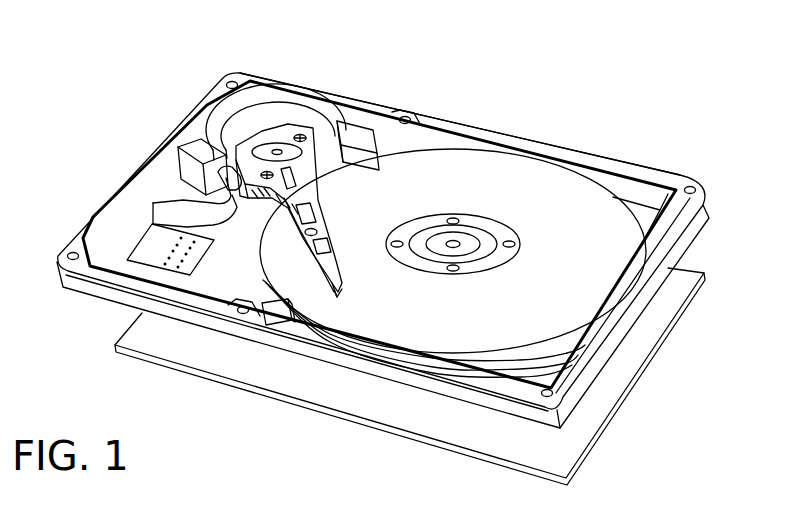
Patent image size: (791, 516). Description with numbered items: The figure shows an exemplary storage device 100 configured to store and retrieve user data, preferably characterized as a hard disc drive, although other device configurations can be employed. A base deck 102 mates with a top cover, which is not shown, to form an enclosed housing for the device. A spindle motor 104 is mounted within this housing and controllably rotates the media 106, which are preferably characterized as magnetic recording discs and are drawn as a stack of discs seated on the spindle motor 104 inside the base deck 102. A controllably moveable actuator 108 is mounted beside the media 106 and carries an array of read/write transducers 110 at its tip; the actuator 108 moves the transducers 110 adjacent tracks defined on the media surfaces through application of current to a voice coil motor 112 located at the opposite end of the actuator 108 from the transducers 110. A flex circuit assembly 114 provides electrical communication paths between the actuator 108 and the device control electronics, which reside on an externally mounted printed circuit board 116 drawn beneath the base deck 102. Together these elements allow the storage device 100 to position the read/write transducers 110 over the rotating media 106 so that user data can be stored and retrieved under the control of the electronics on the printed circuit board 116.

The storage device 100 is at (92, 74).
The base deck 102 is at (622, 333).
The spindle motor 104 is at (462, 236).
The media 106 is at (413, 430).
The actuator 108 is at (347, 197).
The read/write transducers 110 is at (339, 291).
The voice coil motor 112 is at (258, 113).
The flex circuit assembly 114 is at (173, 205).
The printed circuit board 116 is at (538, 472).